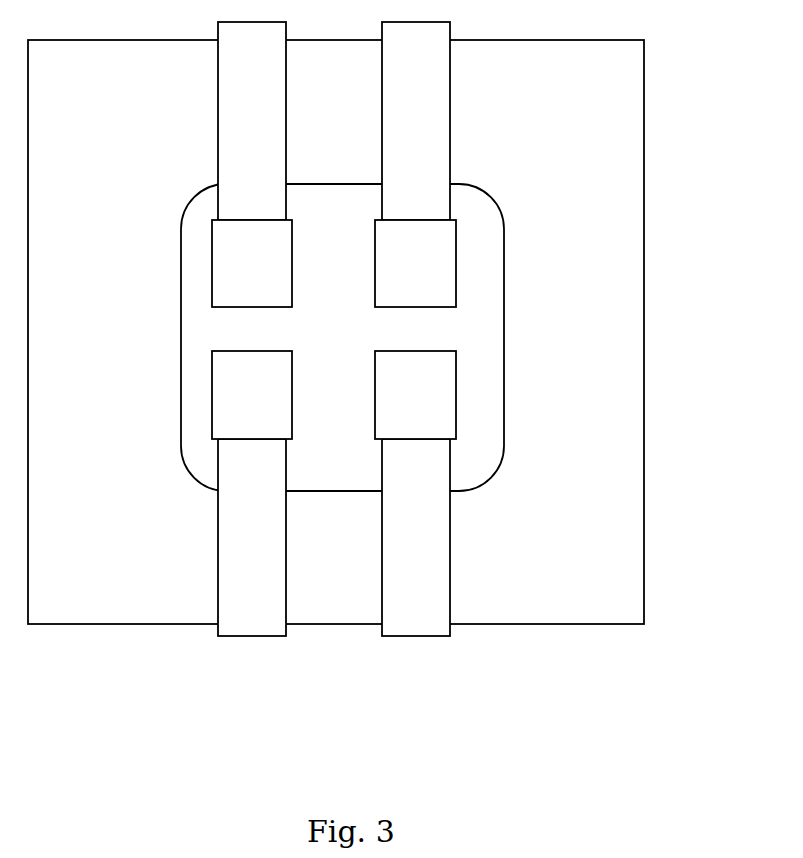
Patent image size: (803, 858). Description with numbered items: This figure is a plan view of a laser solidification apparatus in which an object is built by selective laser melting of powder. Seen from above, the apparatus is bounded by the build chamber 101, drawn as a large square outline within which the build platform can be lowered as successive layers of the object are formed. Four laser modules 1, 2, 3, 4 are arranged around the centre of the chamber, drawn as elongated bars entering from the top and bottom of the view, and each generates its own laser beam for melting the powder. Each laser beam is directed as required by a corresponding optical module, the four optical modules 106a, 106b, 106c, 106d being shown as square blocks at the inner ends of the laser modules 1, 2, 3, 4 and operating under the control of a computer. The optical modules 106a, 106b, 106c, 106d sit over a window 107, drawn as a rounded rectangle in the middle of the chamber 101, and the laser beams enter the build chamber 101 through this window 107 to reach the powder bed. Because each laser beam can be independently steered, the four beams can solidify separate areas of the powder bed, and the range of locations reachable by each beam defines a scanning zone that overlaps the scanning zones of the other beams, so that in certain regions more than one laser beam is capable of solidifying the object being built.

The laser module 1 is at (217, 97).
The laser module 2 is at (451, 89).
The laser module 3 is at (451, 540).
The laser module 4 is at (217, 538).
The chamber 101 is at (645, 164).
The optical module 106a is at (211, 259).
The optical module 106b is at (457, 261).
The optical module 106c is at (211, 403).
The optical module 106d is at (457, 391).
The window 107 is at (505, 325).